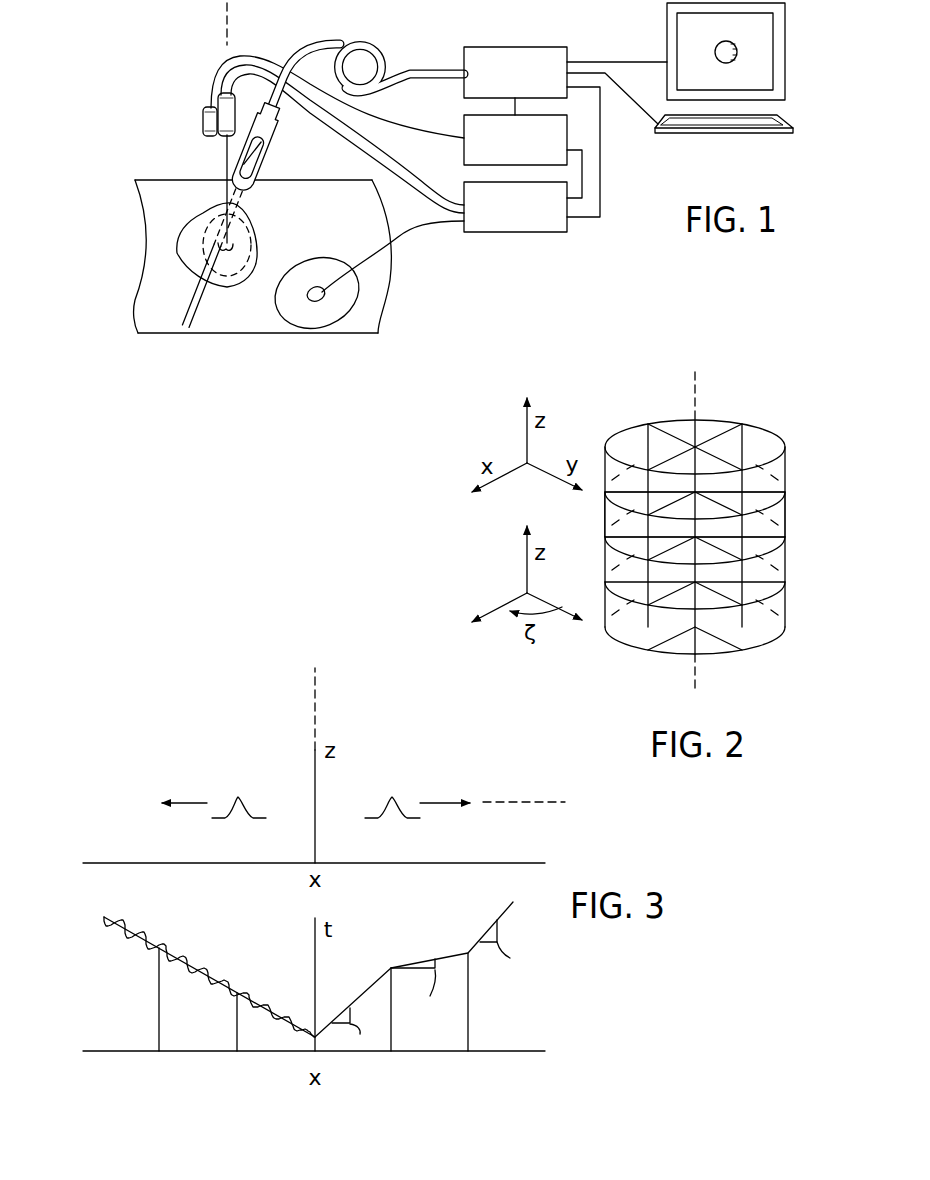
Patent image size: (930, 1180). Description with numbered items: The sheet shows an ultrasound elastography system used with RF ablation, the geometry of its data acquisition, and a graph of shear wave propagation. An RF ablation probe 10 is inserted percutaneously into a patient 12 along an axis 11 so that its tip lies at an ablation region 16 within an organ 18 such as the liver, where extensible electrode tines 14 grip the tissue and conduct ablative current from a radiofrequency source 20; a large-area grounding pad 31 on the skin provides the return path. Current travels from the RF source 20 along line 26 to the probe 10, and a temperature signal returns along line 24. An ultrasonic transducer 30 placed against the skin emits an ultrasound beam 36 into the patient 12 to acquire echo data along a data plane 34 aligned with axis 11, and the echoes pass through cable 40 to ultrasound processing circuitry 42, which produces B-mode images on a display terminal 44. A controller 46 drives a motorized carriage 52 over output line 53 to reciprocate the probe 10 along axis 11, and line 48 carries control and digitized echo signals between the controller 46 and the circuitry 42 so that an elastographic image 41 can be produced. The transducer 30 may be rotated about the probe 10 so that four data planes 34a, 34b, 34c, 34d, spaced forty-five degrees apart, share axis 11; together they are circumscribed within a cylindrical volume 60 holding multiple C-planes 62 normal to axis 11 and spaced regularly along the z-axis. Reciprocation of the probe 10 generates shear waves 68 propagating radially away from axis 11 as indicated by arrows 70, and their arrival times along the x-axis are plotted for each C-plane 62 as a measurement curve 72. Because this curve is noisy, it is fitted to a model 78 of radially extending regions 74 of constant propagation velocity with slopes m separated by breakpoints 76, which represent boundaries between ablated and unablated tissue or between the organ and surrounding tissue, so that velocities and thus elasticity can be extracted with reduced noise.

In FIG. 1, the RF ablation probe 10 is at (226, 163).
In FIG. 1, the axis 11 is at (225, 13).
In FIG. 2, the axis 11 is at (697, 407).
In FIG. 3, the axis 11 is at (315, 703).
In FIG. 1, the patient 12 is at (256, 318).
In FIG. 1, the extensible electrode tines 14 is at (222, 268).
In FIG. 1, the ablation region 16 is at (238, 261).
In FIG. 1, the organ 18 is at (183, 247).
In FIG. 1, the radiofrequency source 20 is at (515, 207).
In FIG. 1, the line 24 is at (441, 182).
In FIG. 1, the line 26 is at (416, 191).
In FIG. 1, the ultrasonic transducer 30 is at (268, 134).
In FIG. 1, the grounding pad 31 is at (342, 294).
In FIG. 1, the data plane 34 is at (198, 313).
In FIG. 2, the data plane 34a is at (718, 432).
In FIG. 2, the data plane 34b is at (760, 447).
In FIG. 2, the data plane 34c is at (727, 457).
In FIG. 2, the data plane 34d is at (662, 452).
In FIG. 1, the ultrasound beam 36 is at (235, 200).
In FIG. 1, the cable 40 is at (411, 69).
In FIG. 1, the elastographic image 41 is at (738, 52).
In FIG. 1, the ultrasound processing circuitry 42 is at (515, 72).
In FIG. 1, the display terminal 44 is at (787, 56).
In FIG. 1, the controller 46 is at (515, 140).
In FIG. 1, the line 48 is at (517, 106).
In FIG. 1, the motorized carriage 52 is at (203, 121).
In FIG. 1, the output line 53 is at (425, 136).
In FIG. 2, the cylindrical volume 60 is at (793, 585).
In FIG. 2, the C-planes 62 is at (797, 537).
In FIG. 3, the C-planes 62 is at (526, 800).
In FIG. 3, the shear waves 68 is at (238, 797).
In FIG. 3, the arrows 70 is at (193, 803).
In FIG. 3, the measurement curve 72 is at (198, 967).
In FIG. 3, the radially extending regions 74 is at (350, 972).
In FIG. 3, the breakpoints 76 is at (389, 1094).
In FIG. 3, the model 78 is at (440, 958).